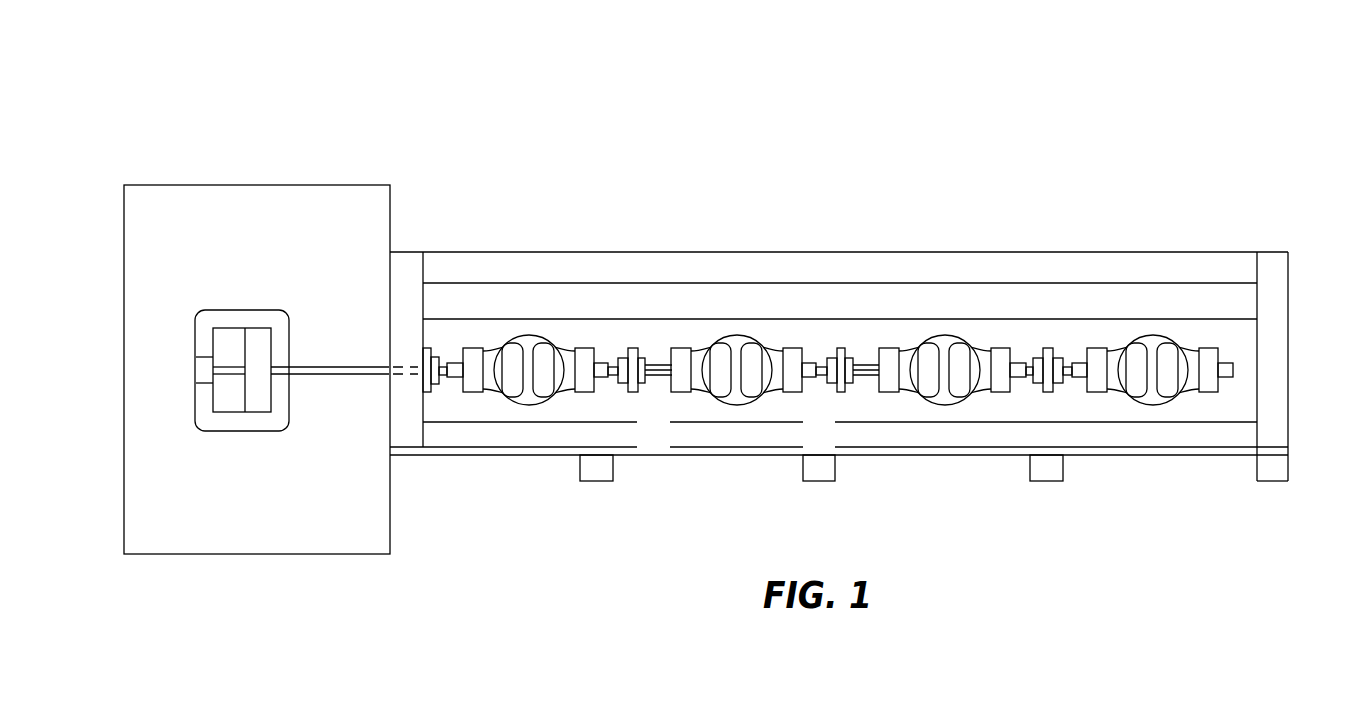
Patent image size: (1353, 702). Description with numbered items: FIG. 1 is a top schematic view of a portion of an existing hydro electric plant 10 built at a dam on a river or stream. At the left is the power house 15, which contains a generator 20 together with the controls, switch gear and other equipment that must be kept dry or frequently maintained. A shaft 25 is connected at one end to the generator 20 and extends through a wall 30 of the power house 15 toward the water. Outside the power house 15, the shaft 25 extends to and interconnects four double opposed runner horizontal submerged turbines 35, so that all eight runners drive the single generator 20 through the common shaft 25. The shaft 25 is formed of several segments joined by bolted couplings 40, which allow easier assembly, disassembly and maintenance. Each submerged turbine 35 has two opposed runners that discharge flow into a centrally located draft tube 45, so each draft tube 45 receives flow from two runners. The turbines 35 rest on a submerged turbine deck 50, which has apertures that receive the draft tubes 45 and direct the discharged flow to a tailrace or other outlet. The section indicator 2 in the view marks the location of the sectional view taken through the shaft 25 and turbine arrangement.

The hydro electric plant 10 is at (1036, 85).
The power house 15 is at (257, 186).
The generator 20 is at (203, 422).
The shaft 25 is at (338, 371).
The wall 30 is at (389, 281).
The double opposed runner horizontal submerged turbine 35 is at (555, 334).
The bolted coupling 40 is at (628, 387).
The draft tube 45 is at (527, 335).
The submerged turbine deck 50 is at (1238, 394).
The section line 2 is at (654, 383).